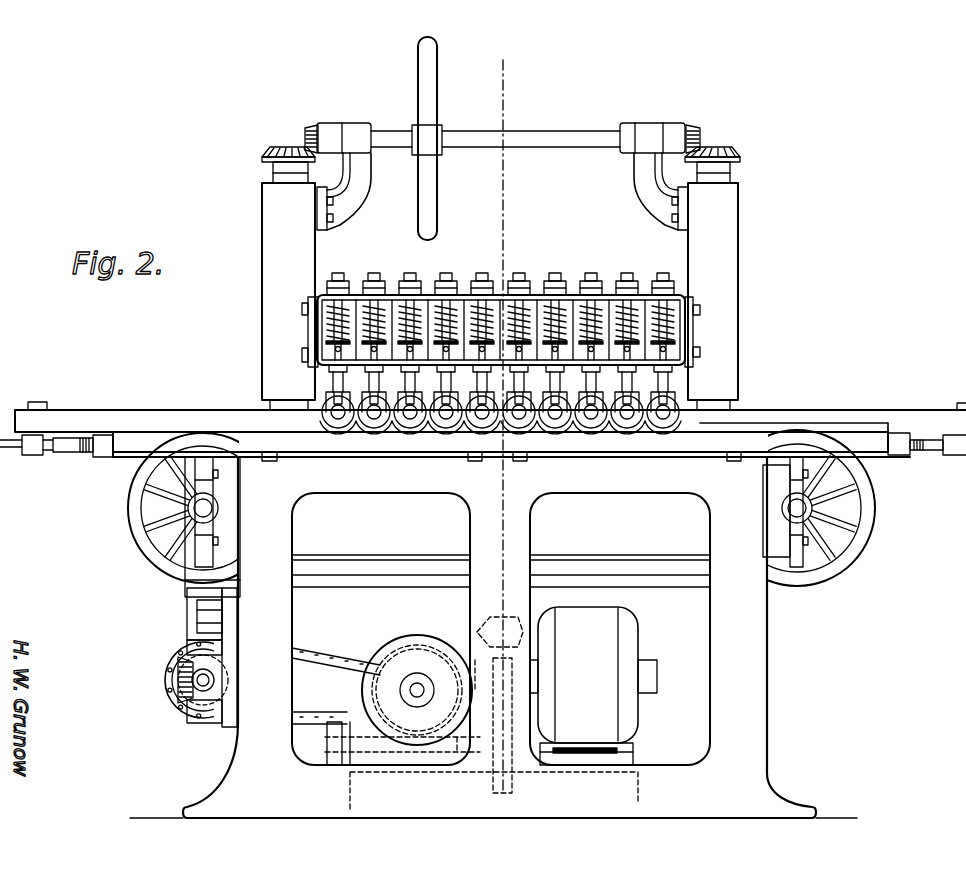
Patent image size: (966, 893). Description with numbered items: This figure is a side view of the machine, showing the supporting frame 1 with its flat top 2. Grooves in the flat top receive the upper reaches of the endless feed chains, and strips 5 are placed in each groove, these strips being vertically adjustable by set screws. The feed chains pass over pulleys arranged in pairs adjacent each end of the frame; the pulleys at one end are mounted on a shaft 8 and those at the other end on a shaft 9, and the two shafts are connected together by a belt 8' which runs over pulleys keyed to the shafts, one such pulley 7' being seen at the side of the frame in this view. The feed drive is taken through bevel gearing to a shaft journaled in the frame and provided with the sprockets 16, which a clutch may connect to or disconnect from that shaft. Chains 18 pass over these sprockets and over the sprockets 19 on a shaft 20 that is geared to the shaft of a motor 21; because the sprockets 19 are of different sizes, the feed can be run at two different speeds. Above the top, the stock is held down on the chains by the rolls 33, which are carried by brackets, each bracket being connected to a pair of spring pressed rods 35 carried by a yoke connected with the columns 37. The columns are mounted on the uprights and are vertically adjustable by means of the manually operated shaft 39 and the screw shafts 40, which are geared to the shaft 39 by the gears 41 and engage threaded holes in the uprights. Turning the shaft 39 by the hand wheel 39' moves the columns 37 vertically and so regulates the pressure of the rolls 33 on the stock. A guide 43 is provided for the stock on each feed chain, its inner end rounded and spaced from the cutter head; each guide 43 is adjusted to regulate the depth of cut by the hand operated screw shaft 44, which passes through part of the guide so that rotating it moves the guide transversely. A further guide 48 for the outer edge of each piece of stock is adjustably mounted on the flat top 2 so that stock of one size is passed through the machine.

The supporting frame 1 is at (742, 701).
The flat top 2 is at (606, 447).
The strips 5 is at (496, 63).
The pulley wheel 7' is at (189, 508).
The shaft 8 is at (797, 508).
The belt 8' is at (501, 557).
The shaft 9 is at (210, 508).
The sprockets 16 is at (183, 697).
The chains 18 is at (313, 657).
The sprockets 19 is at (424, 647).
The shaft 20 is at (417, 694).
The motor 21 is at (593, 686).
The rolls 33 is at (443, 427).
The spring pressed rods 35 is at (449, 273).
The columns 37 is at (273, 265).
The manually operated shaft 39 is at (495, 151).
The hand wheel 39' is at (442, 138).
The screw shafts 40 is at (283, 147).
The gears 41 is at (311, 125).
The guide 43 is at (186, 419).
The hand operated screw shaft 44 is at (72, 444).
The guide 48 is at (793, 426).